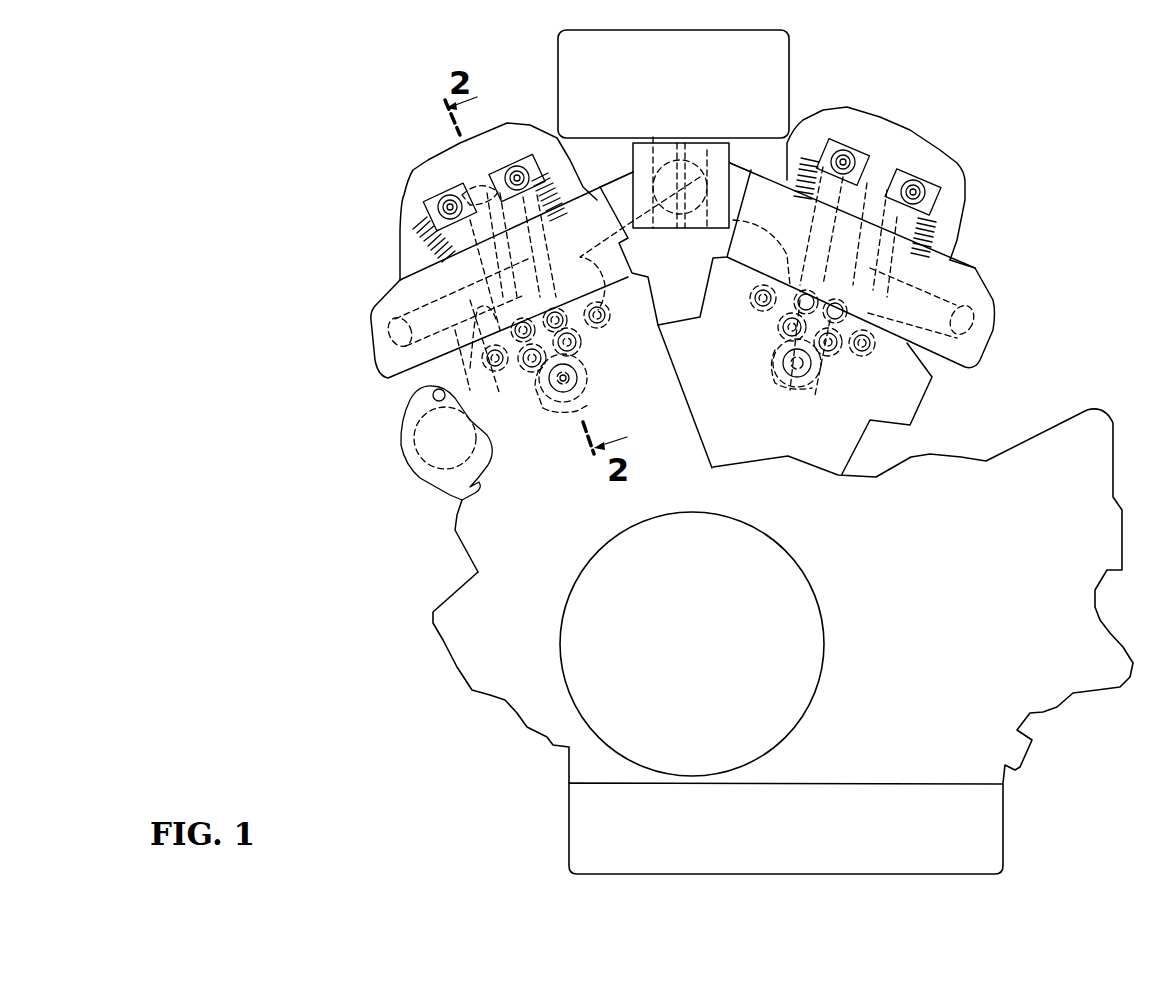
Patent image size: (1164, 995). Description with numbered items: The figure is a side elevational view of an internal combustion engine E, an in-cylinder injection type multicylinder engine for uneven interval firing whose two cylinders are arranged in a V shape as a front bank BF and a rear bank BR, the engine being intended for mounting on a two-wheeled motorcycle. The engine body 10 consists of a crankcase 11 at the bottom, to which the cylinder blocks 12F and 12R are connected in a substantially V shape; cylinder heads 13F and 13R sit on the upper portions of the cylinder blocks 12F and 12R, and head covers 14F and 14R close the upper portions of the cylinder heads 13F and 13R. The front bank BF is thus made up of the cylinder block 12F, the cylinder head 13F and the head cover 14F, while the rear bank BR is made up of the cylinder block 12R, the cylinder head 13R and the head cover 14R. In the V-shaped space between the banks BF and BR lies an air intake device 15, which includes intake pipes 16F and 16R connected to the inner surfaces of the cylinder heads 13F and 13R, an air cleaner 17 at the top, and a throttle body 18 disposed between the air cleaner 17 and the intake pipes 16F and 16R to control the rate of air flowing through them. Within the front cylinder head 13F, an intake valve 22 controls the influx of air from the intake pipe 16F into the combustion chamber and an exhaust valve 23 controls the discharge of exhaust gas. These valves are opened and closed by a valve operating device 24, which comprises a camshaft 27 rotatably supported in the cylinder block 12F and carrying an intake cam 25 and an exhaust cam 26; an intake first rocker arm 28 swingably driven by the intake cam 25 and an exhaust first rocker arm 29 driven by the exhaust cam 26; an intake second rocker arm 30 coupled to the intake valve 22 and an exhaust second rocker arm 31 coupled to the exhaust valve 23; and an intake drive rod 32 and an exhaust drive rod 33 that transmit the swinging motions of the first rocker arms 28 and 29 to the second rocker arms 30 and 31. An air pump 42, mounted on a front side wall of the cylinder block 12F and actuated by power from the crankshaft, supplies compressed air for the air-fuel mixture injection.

The internal combustion engine E is at (438, 643).
The engine body 10 is at (1044, 711).
The crankcase 11 is at (553, 742).
The cylinder block 12F is at (462, 530).
The cylinder block 12R is at (892, 403).
The cylinder head 13F is at (400, 305).
The cylinder head 13R is at (968, 275).
The head cover 14F is at (410, 190).
The head cover 14R is at (960, 178).
The air intake device 15 is at (793, 95).
The intake pipe 16F is at (617, 187).
The intake pipe 16R is at (742, 170).
The air cleaner 17 is at (778, 63).
The throttle body 18 is at (700, 228).
The intake valve 22 is at (578, 313).
The exhaust valve 23 is at (481, 367).
The valve operating device 24 is at (542, 412).
The intake cam 25 is at (590, 391).
The exhaust cam 26 is at (555, 403).
The camshaft 27 is at (533, 392).
The intake first rocker arm 28 is at (587, 338).
The exhaust first rocker arm 29 is at (515, 365).
The intake second rocker arm 30 is at (548, 127).
The exhaust second rocker arm 31 is at (423, 213).
The intake drive rod 32 is at (512, 165).
The exhaust drive rod 33 is at (473, 187).
The air pump 42 is at (412, 462).
The front bank BF is at (444, 517).
The rear bank BR is at (932, 391).